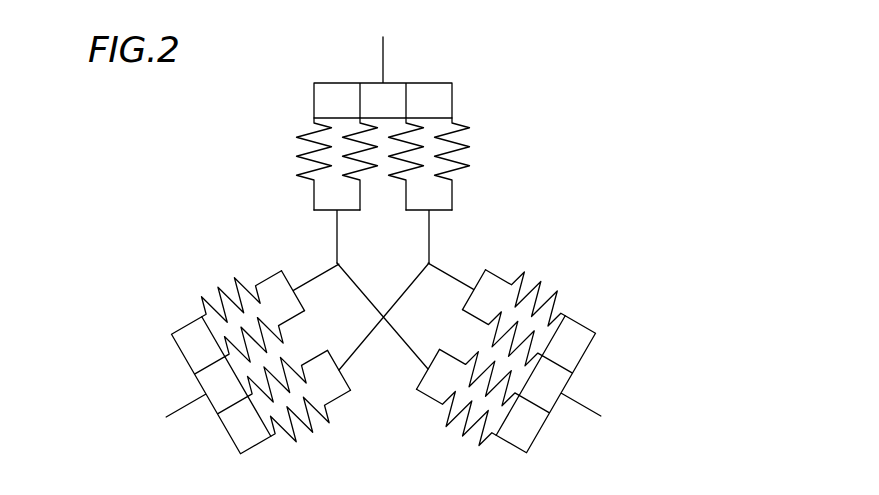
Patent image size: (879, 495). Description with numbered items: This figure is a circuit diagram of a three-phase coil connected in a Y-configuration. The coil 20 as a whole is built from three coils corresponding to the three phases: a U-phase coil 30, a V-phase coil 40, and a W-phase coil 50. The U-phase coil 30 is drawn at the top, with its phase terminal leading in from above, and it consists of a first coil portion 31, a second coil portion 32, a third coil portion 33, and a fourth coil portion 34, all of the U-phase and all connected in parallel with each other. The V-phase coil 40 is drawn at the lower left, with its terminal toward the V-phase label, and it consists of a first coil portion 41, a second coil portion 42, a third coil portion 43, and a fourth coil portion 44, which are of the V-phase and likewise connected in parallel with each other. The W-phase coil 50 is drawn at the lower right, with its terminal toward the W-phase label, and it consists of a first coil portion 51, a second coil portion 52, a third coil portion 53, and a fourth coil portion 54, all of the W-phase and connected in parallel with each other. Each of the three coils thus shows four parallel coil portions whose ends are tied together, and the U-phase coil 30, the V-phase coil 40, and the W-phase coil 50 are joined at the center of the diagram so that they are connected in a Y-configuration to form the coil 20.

The coil 20 is at (604, 71).
The U-phase coil 30 is at (392, 60).
The first coil portion 31 is at (312, 129).
The second coil portion 32 is at (349, 152).
The third coil portion 33 is at (397, 152).
The fourth coil portion 34 is at (443, 152).
The V-phase coil 40 is at (185, 393).
The first coil portion 41 is at (202, 304).
The second coil portion 42 is at (228, 341).
The third coil portion 43 is at (251, 387).
The fourth coil portion 44 is at (269, 427).
The W-phase coil 50 is at (594, 393).
The first coil portion 51 is at (450, 417).
The second coil portion 52 is at (478, 367).
The third coil portion 53 is at (495, 333).
The fourth coil portion 54 is at (521, 293).